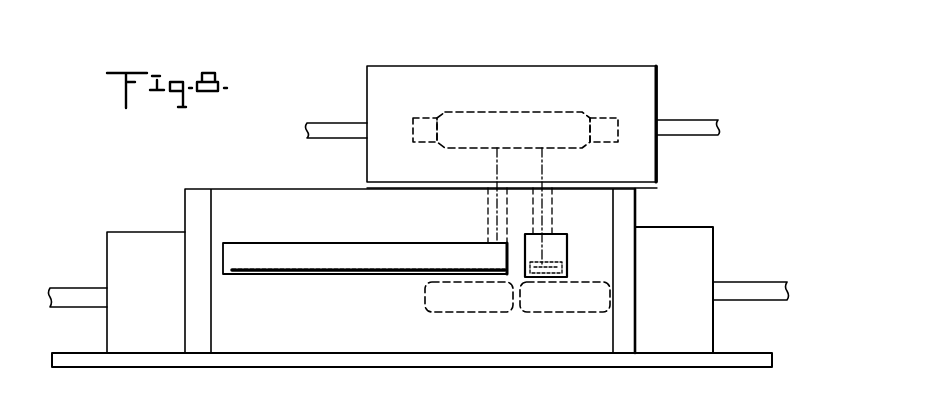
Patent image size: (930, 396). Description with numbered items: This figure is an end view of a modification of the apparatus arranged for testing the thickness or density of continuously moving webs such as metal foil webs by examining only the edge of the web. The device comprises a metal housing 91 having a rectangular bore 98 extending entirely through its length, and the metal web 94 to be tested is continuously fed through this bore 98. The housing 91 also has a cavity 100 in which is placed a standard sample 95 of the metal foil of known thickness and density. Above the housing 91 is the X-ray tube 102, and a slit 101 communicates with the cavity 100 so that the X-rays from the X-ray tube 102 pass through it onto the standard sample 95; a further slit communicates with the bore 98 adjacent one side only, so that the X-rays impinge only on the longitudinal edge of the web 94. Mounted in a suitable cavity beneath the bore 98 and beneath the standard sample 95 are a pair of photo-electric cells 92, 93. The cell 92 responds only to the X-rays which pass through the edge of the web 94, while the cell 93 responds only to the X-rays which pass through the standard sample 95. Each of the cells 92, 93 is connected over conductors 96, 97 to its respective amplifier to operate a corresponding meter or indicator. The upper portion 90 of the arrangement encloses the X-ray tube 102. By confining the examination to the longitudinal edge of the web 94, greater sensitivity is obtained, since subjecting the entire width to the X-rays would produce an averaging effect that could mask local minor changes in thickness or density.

The upper housing 90 is at (630, 64).
The metal housing 91 is at (241, 190).
The photo-electric cell 92 is at (454, 305).
The photo-electric cell 93 is at (568, 304).
The metal web 94 is at (333, 270).
The standard sample 95 is at (550, 262).
The conductor 96 is at (73, 292).
The conductor 97 is at (748, 290).
The rectangular bore 98 is at (276, 249).
The cavity 100 is at (547, 247).
The slit 101 is at (550, 194).
The X-ray tube 102 is at (549, 111).